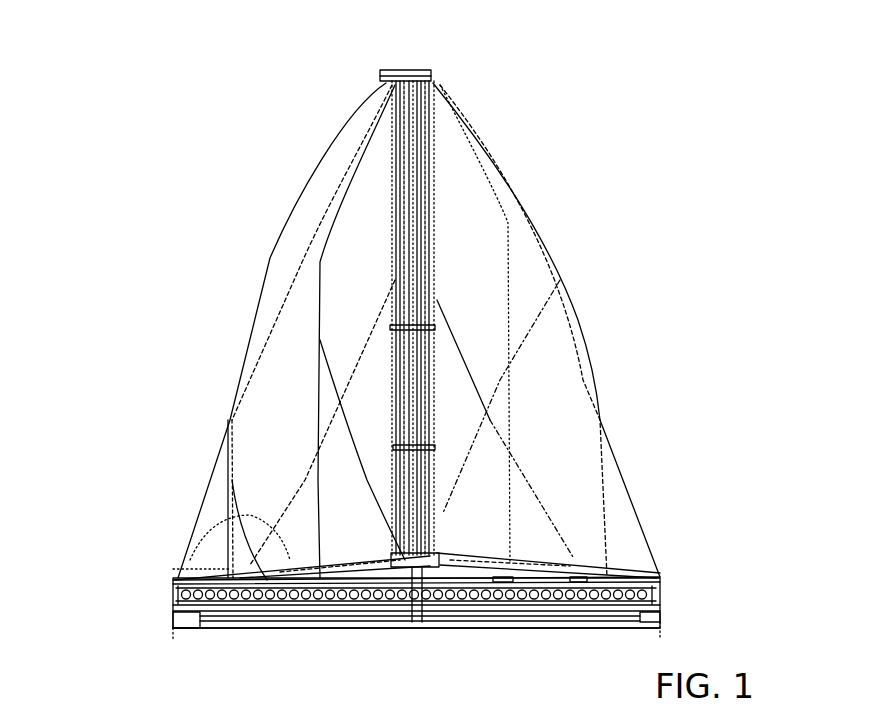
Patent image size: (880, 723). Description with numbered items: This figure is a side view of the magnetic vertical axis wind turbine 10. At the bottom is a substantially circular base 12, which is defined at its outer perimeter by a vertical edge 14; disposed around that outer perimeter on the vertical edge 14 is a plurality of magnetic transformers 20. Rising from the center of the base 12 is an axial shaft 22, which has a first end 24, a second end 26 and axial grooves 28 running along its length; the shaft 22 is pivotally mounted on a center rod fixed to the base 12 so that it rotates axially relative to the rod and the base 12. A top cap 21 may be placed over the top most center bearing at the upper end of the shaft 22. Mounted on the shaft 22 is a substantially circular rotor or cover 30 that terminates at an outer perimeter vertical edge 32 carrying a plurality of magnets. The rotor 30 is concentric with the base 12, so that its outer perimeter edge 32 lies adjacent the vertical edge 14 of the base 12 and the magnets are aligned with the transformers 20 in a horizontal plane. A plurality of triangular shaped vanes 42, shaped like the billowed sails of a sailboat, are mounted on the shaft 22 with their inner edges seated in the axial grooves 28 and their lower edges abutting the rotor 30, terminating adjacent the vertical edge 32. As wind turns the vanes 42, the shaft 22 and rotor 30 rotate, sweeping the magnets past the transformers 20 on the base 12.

The magnetic vertical axis wind turbine 10 is at (546, 126).
The base 12 is at (660, 618).
The vertical edge 14 is at (175, 614).
The magnetic transformers 20 is at (640, 597).
The top cap 21 is at (400, 70).
The axial shaft 22 is at (420, 102).
The first end 24 is at (435, 540).
The second end 26 is at (393, 90).
The axial grooves 28 is at (420, 247).
The rotor 30 is at (663, 583).
The outer perimeter vertical edge 32 is at (172, 596).
The vanes 42 is at (273, 257).